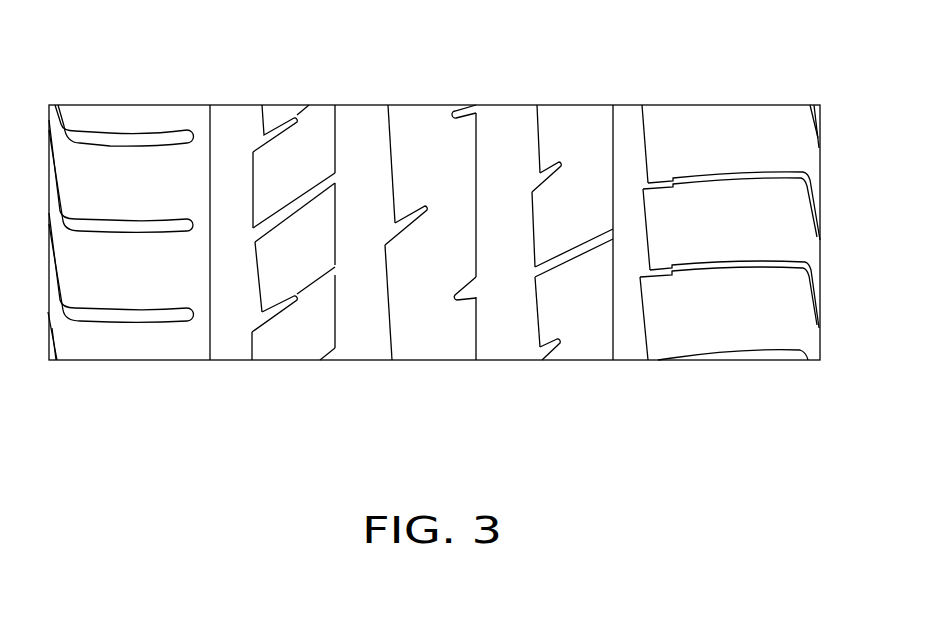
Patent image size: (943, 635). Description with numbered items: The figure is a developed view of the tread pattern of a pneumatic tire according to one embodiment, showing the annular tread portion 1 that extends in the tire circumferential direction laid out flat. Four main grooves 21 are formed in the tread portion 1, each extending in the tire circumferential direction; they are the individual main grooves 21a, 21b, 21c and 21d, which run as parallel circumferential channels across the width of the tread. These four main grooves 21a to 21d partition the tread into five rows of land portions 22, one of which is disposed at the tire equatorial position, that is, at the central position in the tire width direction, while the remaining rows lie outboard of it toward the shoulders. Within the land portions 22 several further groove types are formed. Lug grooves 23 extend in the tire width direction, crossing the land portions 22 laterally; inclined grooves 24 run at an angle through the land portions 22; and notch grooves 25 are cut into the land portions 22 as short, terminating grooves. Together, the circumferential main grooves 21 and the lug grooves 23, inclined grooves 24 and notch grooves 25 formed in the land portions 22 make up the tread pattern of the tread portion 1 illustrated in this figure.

The tread portion 1 is at (722, 108).
The main grooves 21 is at (251, 183).
The main groove 21a is at (237, 117).
The main groove 21b is at (370, 123).
The main groove 21c is at (502, 123).
The main groove 21d is at (627, 125).
The land portions 22 is at (142, 117).
The lug grooves 23 is at (122, 322).
The inclined grooves 24 is at (303, 202).
The notch grooves 25 is at (276, 312).